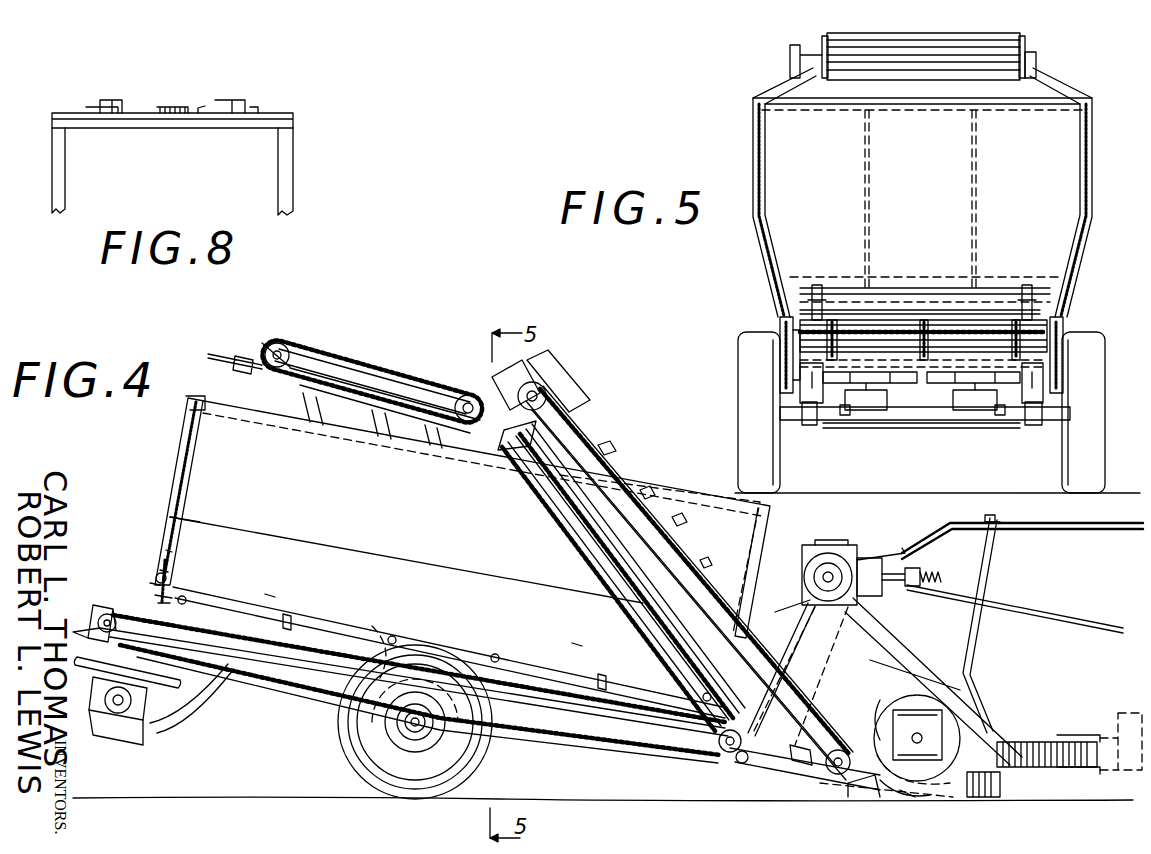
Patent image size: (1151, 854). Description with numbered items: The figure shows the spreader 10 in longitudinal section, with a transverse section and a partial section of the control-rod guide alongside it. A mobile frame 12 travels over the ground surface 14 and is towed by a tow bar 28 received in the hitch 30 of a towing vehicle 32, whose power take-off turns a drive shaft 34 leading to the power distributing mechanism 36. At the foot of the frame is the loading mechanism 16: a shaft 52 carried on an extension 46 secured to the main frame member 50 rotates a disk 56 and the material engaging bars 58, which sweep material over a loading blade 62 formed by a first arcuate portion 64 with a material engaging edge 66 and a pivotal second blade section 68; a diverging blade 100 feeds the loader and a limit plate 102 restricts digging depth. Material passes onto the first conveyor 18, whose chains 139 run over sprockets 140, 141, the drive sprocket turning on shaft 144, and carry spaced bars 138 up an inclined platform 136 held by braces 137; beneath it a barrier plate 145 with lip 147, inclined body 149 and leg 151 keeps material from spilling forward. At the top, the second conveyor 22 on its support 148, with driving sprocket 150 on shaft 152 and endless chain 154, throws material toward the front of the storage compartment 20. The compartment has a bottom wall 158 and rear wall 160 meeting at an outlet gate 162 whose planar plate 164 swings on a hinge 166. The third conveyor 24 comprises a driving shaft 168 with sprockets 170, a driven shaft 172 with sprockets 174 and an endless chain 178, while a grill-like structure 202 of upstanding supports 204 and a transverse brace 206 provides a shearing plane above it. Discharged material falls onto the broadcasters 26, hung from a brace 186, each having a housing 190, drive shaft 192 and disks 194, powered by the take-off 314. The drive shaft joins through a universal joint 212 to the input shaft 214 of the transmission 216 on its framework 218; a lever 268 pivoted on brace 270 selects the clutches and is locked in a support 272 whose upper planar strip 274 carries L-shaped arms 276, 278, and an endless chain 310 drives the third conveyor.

In FIG. 5, the spreader 10 is at (1100, 128).
In FIG. 4, the spreader 10 is at (608, 416).
In FIG. 5, the mobile frame 12 is at (773, 310).
In FIG. 4, the mobile frame 12 is at (560, 740).
In FIG. 4, the ground surface 14 is at (590, 800).
In FIG. 4, the loading mechanism 16 is at (995, 725).
In FIG. 4, the first conveyor 18 is at (648, 490).
In FIG. 5, the storage compartment 20 is at (749, 180).
In FIG. 4, the storage compartment 20 is at (178, 458).
In FIG. 5, the second conveyor 22 is at (1028, 40).
In FIG. 4, the second conveyor 22 is at (380, 352).
In FIG. 5, the third conveyor 24 is at (985, 313).
In FIG. 4, the third conveyor 24 is at (348, 636).
In FIG. 5, the broadcasters 26 is at (955, 396).
In FIG. 4, the broadcasters 26 is at (148, 735).
In FIG. 4, the tow bar 28 is at (1035, 742).
In FIG. 4, the hitch 30 is at (1080, 733).
In FIG. 4, the towing vehicle 32 is at (1125, 708).
In FIG. 4, the drive shaft 34 is at (1030, 610).
In FIG. 4, the power distributing mechanism 36 is at (812, 545).
In FIG. 4, the extension 46 is at (825, 768).
In FIG. 4, the main frame member 50 is at (790, 760).
In FIG. 4, the shaft 52 is at (919, 733).
In FIG. 4, the disk 56 is at (910, 708).
In FIG. 4, the material engaging bars 58 is at (870, 718).
In FIG. 4, the loading blade 62 is at (915, 797).
In FIG. 4, the first arcuate portion 64 is at (900, 792).
In FIG. 4, the material engaging edge 66 is at (950, 785).
In FIG. 4, the second blade section 68 is at (874, 706).
In FIG. 4, the outwardly diverging blade 100 is at (1000, 784).
In FIG. 4, the limit plate 102 is at (848, 797).
In FIG. 4, the inclined platform 136 is at (688, 528).
In FIG. 4, the braces 137 is at (706, 590).
In FIG. 4, the spaced bars 138 is at (612, 472).
In FIG. 4, the chains 139 is at (662, 494).
In FIG. 4, the drive sprocket 140 is at (540, 372).
In FIG. 4, the sprocket 141 is at (825, 785).
In FIG. 4, the shaft 144 is at (548, 378).
In FIG. 4, the barrier plate 145 is at (545, 505).
In FIG. 4, the rearwardly turned lip 147 is at (506, 462).
In FIG. 4, the support 148 is at (244, 355).
In FIG. 4, the inclined main body portion 149 is at (575, 545).
In FIG. 4, the driving sprocket 150 is at (272, 342).
In FIG. 4, the leg 151 is at (672, 672).
In FIG. 4, the rotatable shaft 152 is at (285, 345).
In FIG. 4, the endless chain 154 is at (348, 355).
In FIG. 5, the bottom wall 158 is at (940, 326).
In FIG. 4, the bottom wall 158 is at (310, 655).
In FIG. 4, the rear wall 160 is at (168, 545).
In FIG. 4, the outlet gate 162 is at (152, 575).
In FIG. 4, the planar plate 164 is at (180, 588).
In FIG. 4, the hinge 166 is at (160, 570).
In FIG. 4, the driving shaft 168 is at (736, 760).
In FIG. 4, the sprockets 170 is at (716, 739).
In FIG. 4, the driven shaft 172 is at (148, 596).
In FIG. 4, the sprockets 174 is at (118, 630).
In FIG. 4, the endless chain 178 is at (425, 640).
In FIG. 4, the brace 186 is at (202, 712).
In FIG. 5, the housing 190 is at (866, 404).
In FIG. 4, the housing 190 is at (100, 696).
In FIG. 4, the drive shaft 192 is at (116, 710).
In FIG. 4, the disks 194 is at (98, 668).
In FIG. 5, the grill-like structure 202 is at (850, 291).
In FIG. 4, the grill-like structure 202 is at (278, 590).
In FIG. 4, the upstanding supports 204 is at (280, 617).
In FIG. 4, the transverse brace 206 is at (270, 604).
In FIG. 4, the universal joint 212 is at (932, 560).
In FIG. 4, the input shaft 214 is at (878, 572).
In FIG. 4, the transmission 216 is at (805, 561).
In FIG. 4, the framework 218 is at (800, 600).
In FIG. 8, the lever 268 is at (86, 109).
In FIG. 4, the lever 268 is at (1110, 529).
In FIG. 4, the brace 270 is at (900, 556).
In FIG. 8, the support 272 is at (296, 111).
In FIG. 4, the support 272 is at (993, 567).
In FIG. 8, the upper planar strip 274 is at (204, 106).
In FIG. 4, the upper planar strip 274 is at (995, 527).
In FIG. 8, the L-shaped arm 276 is at (118, 100).
In FIG. 8, the L-shaped arm 278 is at (236, 100).
In FIG. 4, the L-shaped arm 278 is at (997, 516).
In FIG. 4, the endless chain 310 is at (775, 635).
In FIG. 5, the take-off 314 is at (779, 321).